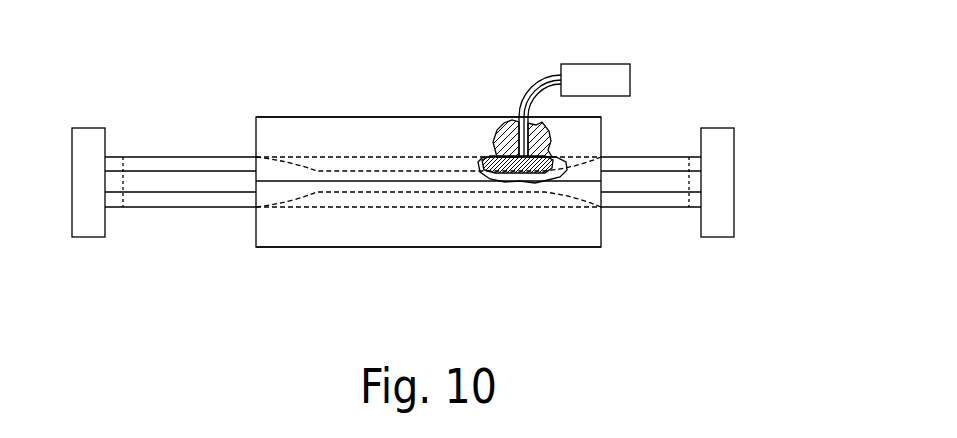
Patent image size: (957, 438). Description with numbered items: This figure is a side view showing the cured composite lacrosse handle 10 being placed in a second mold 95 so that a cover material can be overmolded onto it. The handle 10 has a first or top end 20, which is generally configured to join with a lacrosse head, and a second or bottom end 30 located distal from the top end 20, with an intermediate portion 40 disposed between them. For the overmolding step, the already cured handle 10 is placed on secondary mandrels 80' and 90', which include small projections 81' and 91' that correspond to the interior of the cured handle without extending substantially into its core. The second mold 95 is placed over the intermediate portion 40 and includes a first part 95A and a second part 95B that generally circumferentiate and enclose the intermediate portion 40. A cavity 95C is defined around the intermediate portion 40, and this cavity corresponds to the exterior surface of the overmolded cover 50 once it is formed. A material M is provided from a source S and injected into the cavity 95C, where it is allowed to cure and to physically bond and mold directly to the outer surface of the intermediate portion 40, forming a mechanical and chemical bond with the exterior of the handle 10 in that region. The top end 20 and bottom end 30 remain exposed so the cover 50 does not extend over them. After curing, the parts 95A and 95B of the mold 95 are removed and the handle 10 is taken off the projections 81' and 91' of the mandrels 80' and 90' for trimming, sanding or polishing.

The composite lacrosse handle 10 is at (198, 127).
The first or top end 20 is at (217, 207).
The second or bottom end 30 is at (622, 208).
The intermediate portion 40 is at (438, 198).
The overmolded cover 50 is at (548, 158).
The secondary mandrel 80' is at (106, 206).
The secondary mandrel 90' is at (702, 207).
The small projection 81' is at (131, 158).
The small projection 91' is at (684, 155).
The second mold 95 is at (317, 115).
The first part 95A is at (398, 137).
The second part 95B is at (522, 233).
The cavity 95C is at (436, 160).
The material M is at (490, 158).
The source S is at (595, 83).